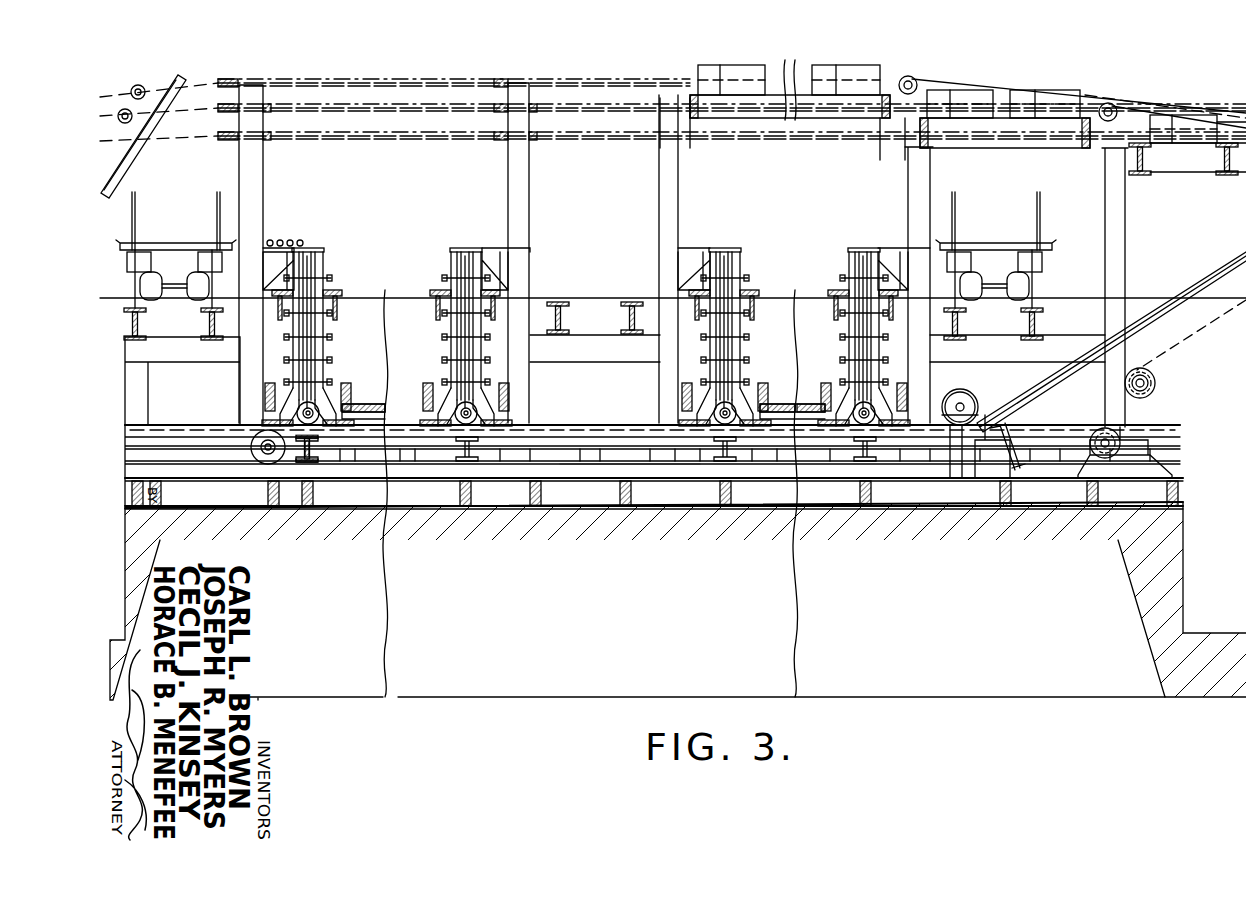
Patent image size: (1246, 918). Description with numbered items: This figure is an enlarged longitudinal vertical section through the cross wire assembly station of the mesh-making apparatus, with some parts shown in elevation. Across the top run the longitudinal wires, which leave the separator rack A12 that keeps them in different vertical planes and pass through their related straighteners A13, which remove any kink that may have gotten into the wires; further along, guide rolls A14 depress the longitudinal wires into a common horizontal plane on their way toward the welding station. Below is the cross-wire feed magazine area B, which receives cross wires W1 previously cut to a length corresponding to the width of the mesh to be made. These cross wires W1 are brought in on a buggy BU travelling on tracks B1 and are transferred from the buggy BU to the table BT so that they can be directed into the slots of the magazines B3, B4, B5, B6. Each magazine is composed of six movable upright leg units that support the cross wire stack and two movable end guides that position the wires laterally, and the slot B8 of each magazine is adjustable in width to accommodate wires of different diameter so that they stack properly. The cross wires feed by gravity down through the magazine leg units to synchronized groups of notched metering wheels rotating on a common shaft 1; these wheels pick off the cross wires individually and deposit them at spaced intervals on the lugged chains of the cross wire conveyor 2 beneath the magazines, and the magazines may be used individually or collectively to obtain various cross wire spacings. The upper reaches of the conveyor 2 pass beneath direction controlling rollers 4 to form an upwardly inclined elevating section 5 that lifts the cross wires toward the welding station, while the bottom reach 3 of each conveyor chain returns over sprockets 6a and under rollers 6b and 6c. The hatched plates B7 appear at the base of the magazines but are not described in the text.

The separator rack A12 is at (138, 86).
The straighteners A13 is at (228, 104).
The guide rolls A14 is at (1240, 110).
The buggy BU is at (586, 266).
The cross wires W1 is at (290, 240).
The table BT is at (586, 316).
The cross-wire feed magazine area B is at (783, 193).
The tracks B1 is at (622, 304).
The slot B8 is at (320, 330).
The magazine B3 is at (320, 350).
The magazine B4 is at (453, 350).
The magazine B5 is at (740, 347).
The magazine B6 is at (876, 347).
The floor plate B7 is at (816, 404).
The common shaft 1 is at (296, 412).
The cross wire conveyor 2 is at (606, 430).
The bottom reach 3 is at (605, 465).
The direction controlling rollers 4 is at (955, 396).
The elevating section 5 is at (1035, 383).
The sprockets 6a is at (1156, 382).
The rollers 6b is at (1098, 440).
The rollers 6c is at (254, 446).